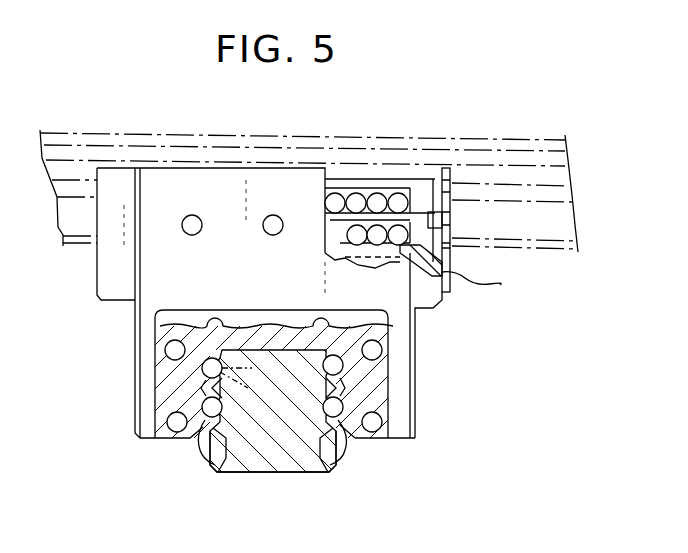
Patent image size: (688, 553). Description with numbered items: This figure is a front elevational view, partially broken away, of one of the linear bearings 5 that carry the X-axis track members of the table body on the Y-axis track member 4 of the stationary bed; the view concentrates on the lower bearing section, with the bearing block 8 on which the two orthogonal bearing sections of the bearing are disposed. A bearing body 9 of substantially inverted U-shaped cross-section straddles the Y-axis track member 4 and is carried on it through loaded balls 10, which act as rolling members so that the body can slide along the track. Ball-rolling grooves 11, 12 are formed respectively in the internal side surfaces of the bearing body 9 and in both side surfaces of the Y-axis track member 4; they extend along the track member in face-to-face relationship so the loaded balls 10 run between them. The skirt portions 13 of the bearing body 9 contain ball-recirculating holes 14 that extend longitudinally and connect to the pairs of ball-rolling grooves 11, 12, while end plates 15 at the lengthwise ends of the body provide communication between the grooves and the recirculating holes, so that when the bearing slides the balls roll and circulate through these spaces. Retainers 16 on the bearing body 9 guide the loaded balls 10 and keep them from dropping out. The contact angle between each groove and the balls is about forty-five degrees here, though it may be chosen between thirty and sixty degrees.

The Y-axis track member 4 is at (260, 462).
The linear bearing 5 is at (232, 168).
The bearing block 8 is at (155, 298).
The bearing body 9 is at (396, 357).
The loaded balls 10 is at (400, 200).
The ball-rolling groove 11 is at (345, 380).
The ball-rolling groove 12 is at (328, 418).
The skirt portion 13 is at (167, 388).
The ball-recirculating hole 14 is at (166, 352).
The end plate 15 is at (452, 273).
The retainer 16 is at (352, 193).